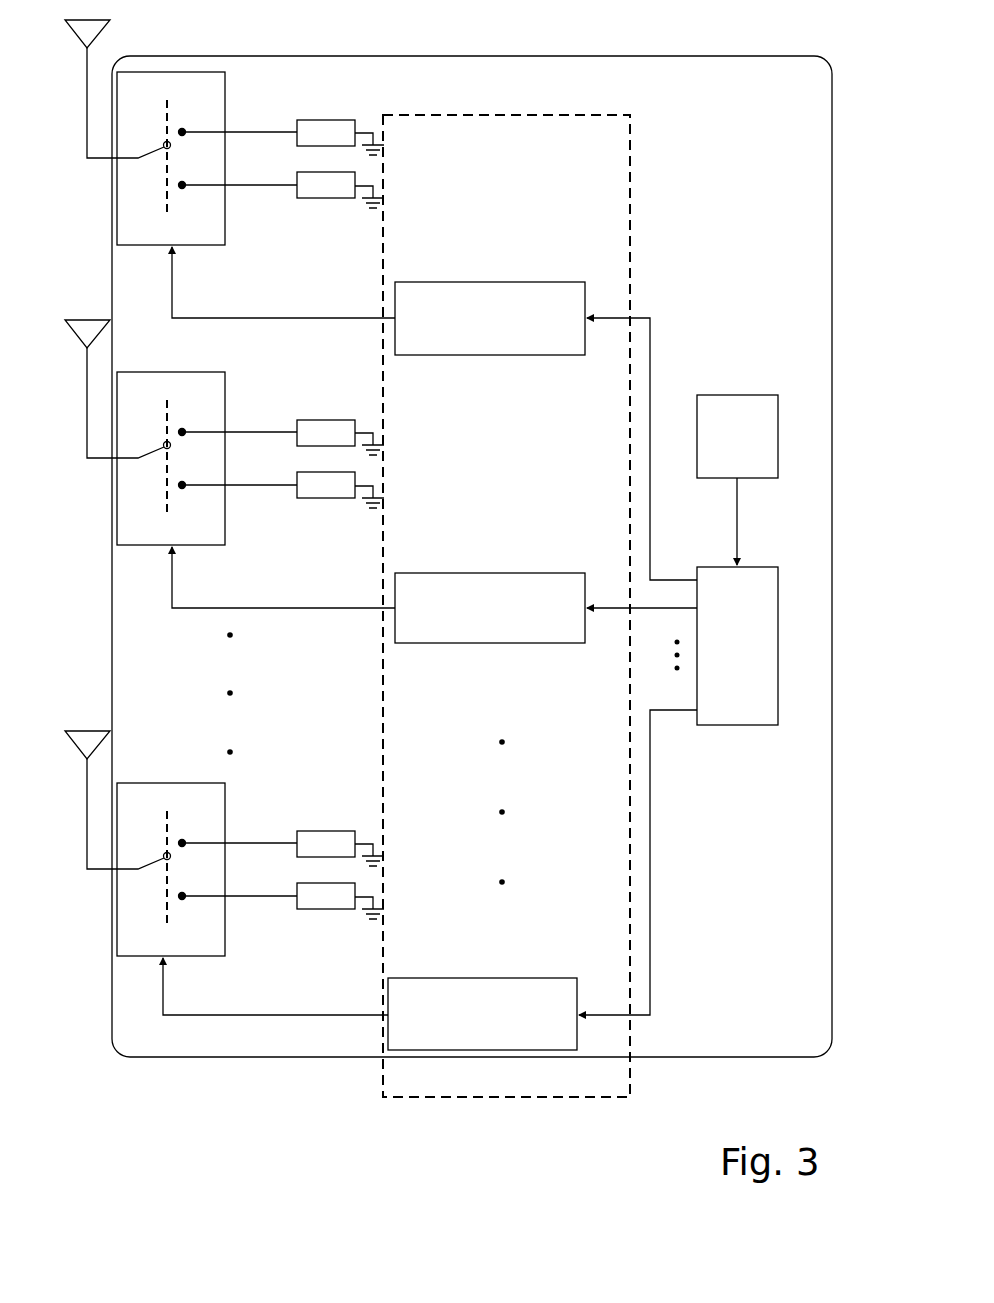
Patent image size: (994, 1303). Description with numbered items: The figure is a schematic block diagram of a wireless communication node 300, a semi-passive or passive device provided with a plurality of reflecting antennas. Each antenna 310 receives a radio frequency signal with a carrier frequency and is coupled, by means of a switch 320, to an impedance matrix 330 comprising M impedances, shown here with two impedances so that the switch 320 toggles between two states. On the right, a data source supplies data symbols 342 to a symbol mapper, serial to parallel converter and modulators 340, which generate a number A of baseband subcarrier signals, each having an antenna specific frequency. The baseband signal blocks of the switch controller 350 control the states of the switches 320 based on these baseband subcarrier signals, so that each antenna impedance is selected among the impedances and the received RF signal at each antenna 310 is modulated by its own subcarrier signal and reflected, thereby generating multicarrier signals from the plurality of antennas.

The wireless communication node 300 is at (857, 560).
The antenna 310 is at (70, 731).
The switch 320 is at (160, 783).
The impedance matrix 330 is at (310, 831).
The symbol mapper, serial to parallel converter and modulators 340 is at (748, 717).
The data symbols 342 is at (742, 395).
The switch controller 350 is at (613, 158).